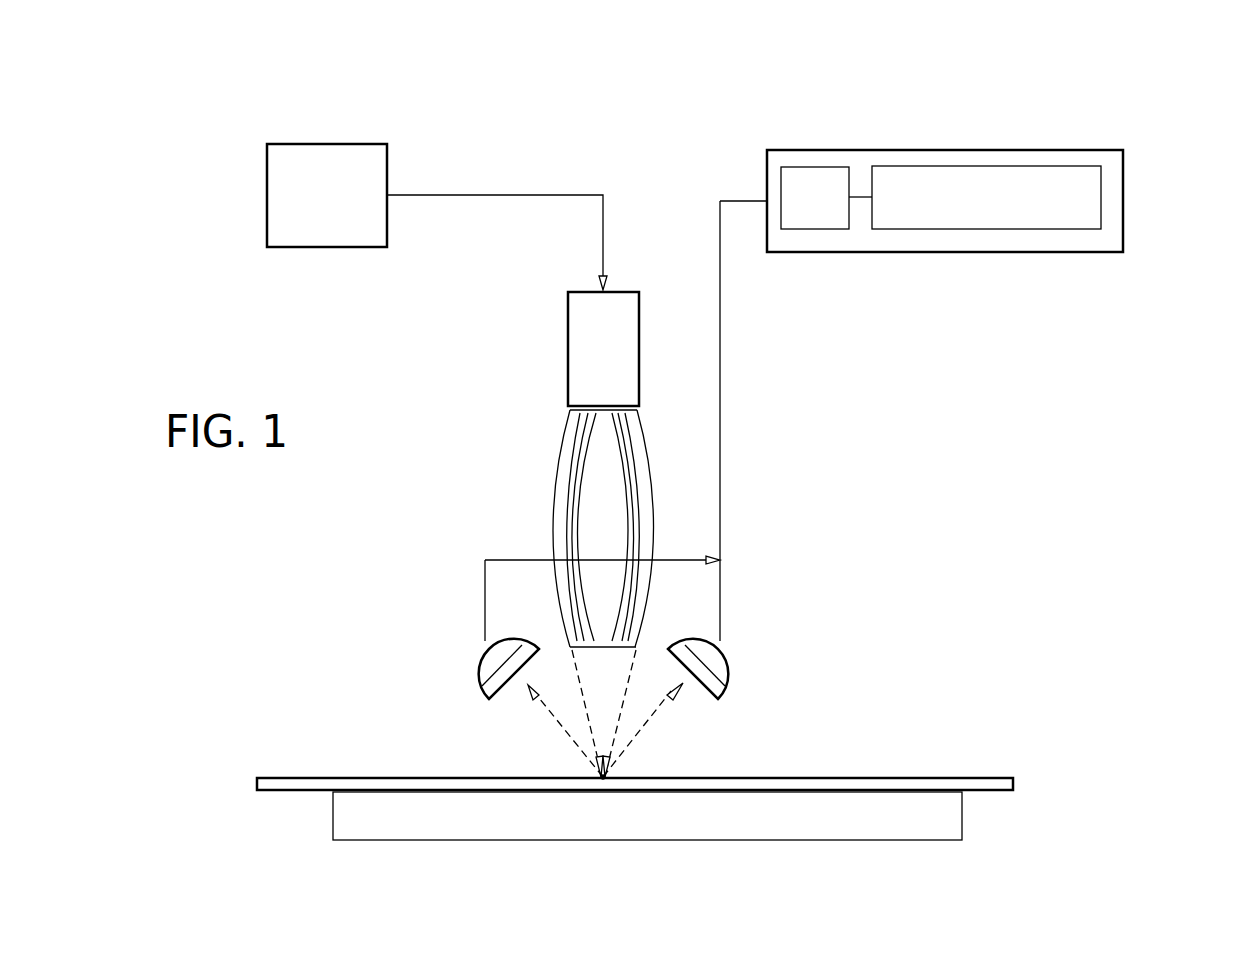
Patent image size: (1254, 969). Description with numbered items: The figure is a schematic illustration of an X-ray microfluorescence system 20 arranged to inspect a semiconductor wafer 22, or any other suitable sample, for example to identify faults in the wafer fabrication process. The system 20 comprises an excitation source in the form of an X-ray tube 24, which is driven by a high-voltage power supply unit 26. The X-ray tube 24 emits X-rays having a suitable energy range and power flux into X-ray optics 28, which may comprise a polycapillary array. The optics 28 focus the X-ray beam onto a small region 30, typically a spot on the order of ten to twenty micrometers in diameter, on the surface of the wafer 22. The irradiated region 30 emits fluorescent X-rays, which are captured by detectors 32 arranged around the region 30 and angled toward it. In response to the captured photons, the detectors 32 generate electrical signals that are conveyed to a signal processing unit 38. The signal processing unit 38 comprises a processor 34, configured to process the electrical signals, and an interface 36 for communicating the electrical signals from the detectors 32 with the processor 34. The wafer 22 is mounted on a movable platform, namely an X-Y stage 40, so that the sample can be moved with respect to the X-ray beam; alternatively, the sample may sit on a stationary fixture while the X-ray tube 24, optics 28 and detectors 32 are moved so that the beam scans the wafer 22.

The X-ray microfluorescence system 20 is at (478, 90).
The semiconductor wafer 22 is at (922, 777).
The X-ray tube 24 is at (568, 322).
The high-voltage power supply unit 26 is at (318, 144).
The X-ray optics 28 is at (553, 488).
The region 30 is at (600, 777).
The detectors 32 is at (478, 654).
The processor 34 is at (975, 166).
The interface 36 is at (814, 167).
The signal processing unit 38 is at (1123, 190).
The X-Y stage 40 is at (962, 815).